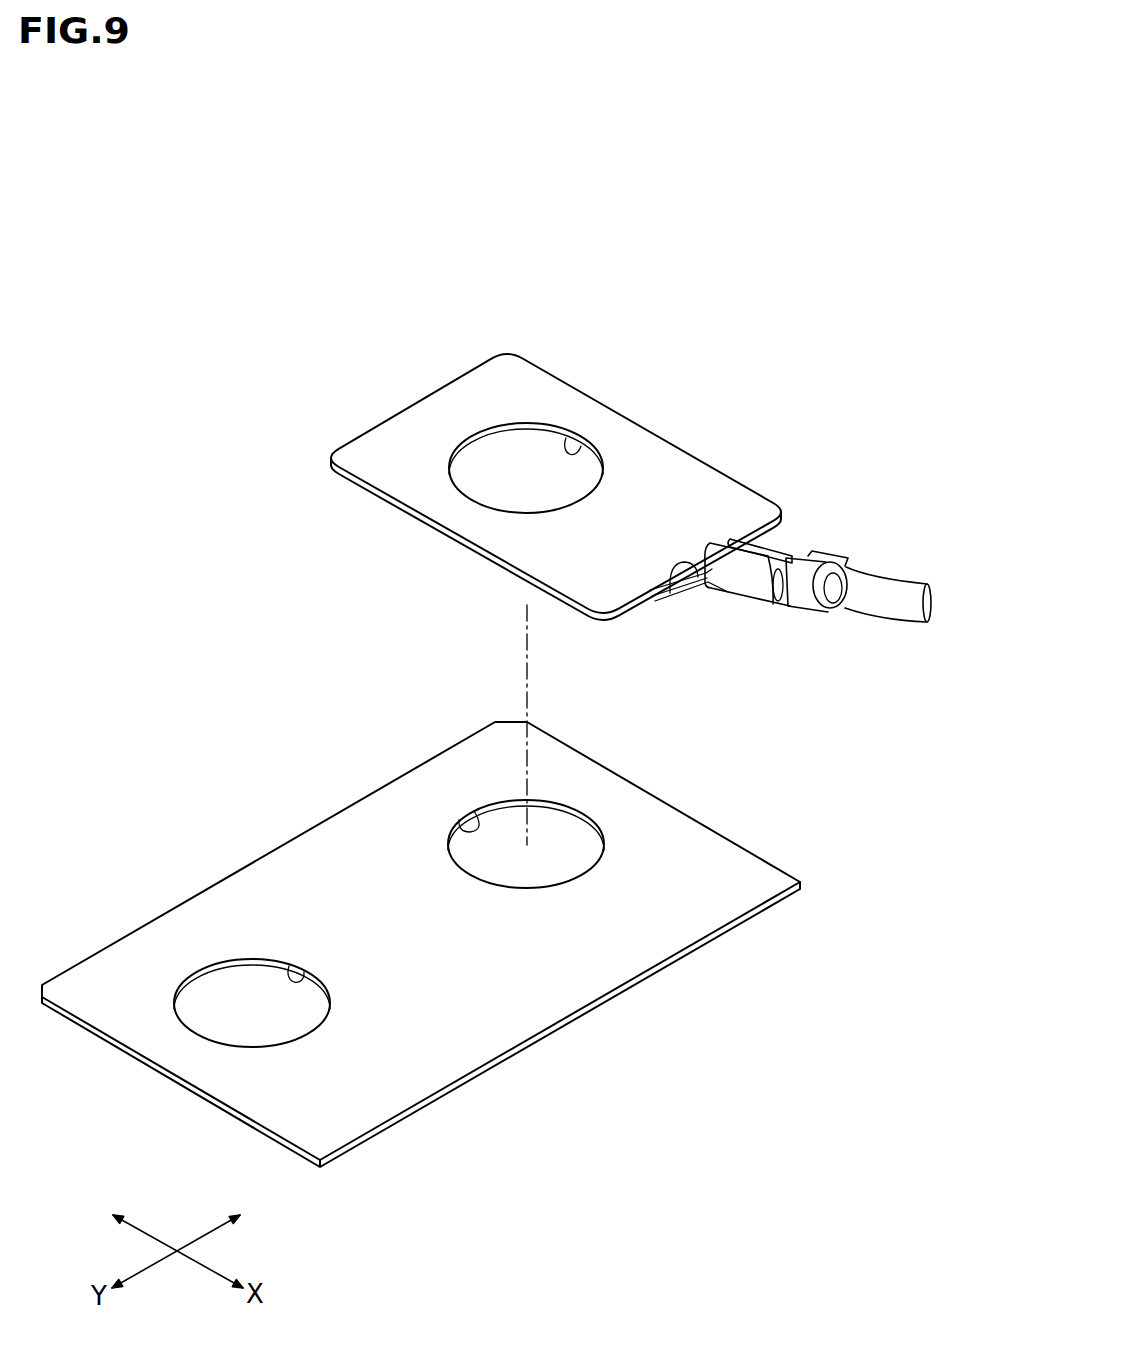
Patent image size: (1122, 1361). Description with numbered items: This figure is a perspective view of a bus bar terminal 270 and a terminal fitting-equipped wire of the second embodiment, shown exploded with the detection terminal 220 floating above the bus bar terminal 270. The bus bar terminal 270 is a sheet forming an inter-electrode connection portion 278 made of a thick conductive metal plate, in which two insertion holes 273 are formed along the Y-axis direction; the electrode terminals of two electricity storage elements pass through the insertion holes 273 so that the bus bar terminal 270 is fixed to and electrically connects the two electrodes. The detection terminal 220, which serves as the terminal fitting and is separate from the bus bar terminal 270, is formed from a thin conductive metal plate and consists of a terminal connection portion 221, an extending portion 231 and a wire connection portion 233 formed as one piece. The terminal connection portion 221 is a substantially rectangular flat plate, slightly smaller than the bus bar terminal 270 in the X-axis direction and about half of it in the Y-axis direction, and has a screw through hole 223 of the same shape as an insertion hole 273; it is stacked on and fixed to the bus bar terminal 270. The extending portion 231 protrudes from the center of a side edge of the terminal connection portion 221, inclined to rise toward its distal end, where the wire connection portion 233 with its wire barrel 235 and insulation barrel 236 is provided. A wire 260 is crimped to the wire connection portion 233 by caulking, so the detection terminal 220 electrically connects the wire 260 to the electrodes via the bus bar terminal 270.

The detection terminal 220 is at (556, 440).
The terminal connection portion 221 is at (525, 392).
The screw through hole 223 is at (566, 440).
The extending portion 231 is at (671, 594).
The wire connection portion 233 is at (776, 636).
The wire barrel 235 is at (742, 575).
The insulation barrel 236 is at (803, 590).
The wire 260 is at (790, 581).
The bus bar terminal 270 is at (421, 912).
The insertion holes 273 is at (289, 966).
The inter-electrode connection portion 278 is at (253, 903).